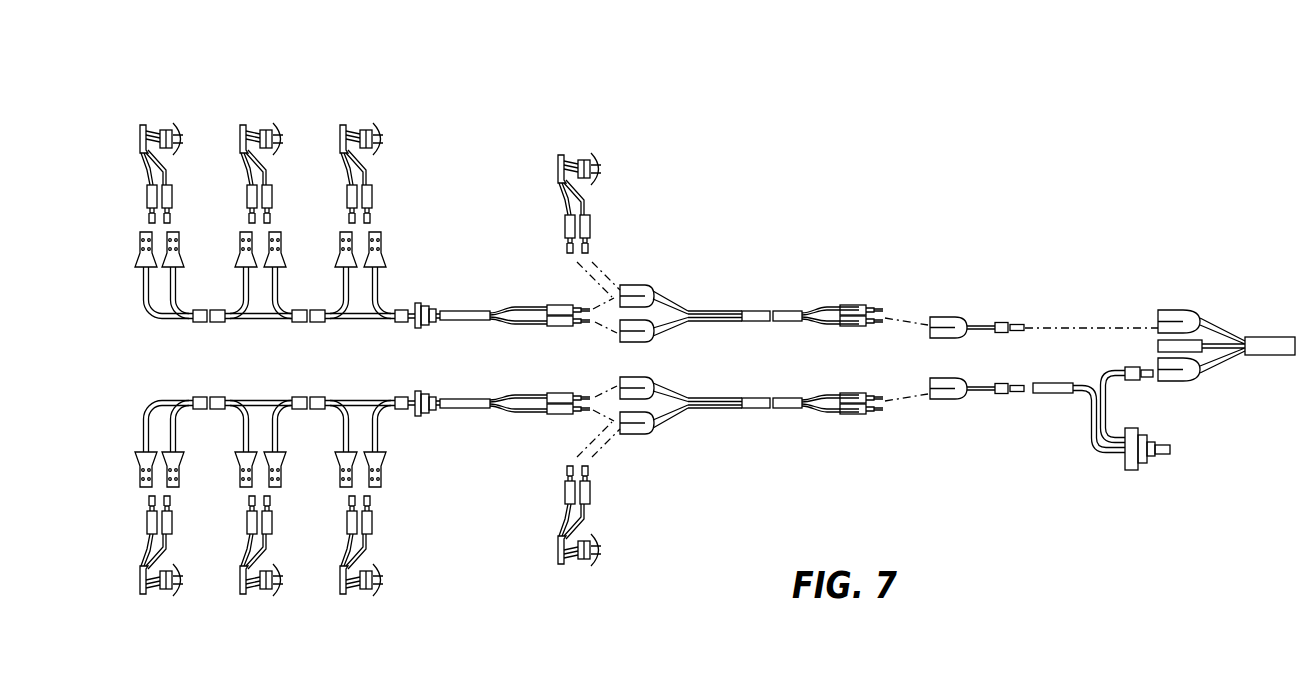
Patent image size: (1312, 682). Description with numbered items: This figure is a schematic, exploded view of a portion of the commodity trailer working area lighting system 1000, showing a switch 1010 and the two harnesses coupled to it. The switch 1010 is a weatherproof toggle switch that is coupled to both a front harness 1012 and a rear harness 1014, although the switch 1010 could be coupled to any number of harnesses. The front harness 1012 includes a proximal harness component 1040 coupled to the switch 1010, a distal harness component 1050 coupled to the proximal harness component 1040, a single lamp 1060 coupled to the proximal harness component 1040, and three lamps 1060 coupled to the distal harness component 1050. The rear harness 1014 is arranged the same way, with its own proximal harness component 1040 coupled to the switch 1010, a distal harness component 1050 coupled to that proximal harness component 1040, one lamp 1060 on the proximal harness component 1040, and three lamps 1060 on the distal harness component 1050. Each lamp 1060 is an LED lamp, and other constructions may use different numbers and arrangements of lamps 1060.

The commodity trailer working area lighting system 1000 is at (695, 358).
The switch 1010 is at (1114, 464).
The front harness 1012 is at (468, 152).
The rear harness 1014 is at (468, 567).
The proximal harness component 1040 is at (753, 306).
The distal harness component 1050 is at (453, 306).
The lamp 1060 is at (170, 116).